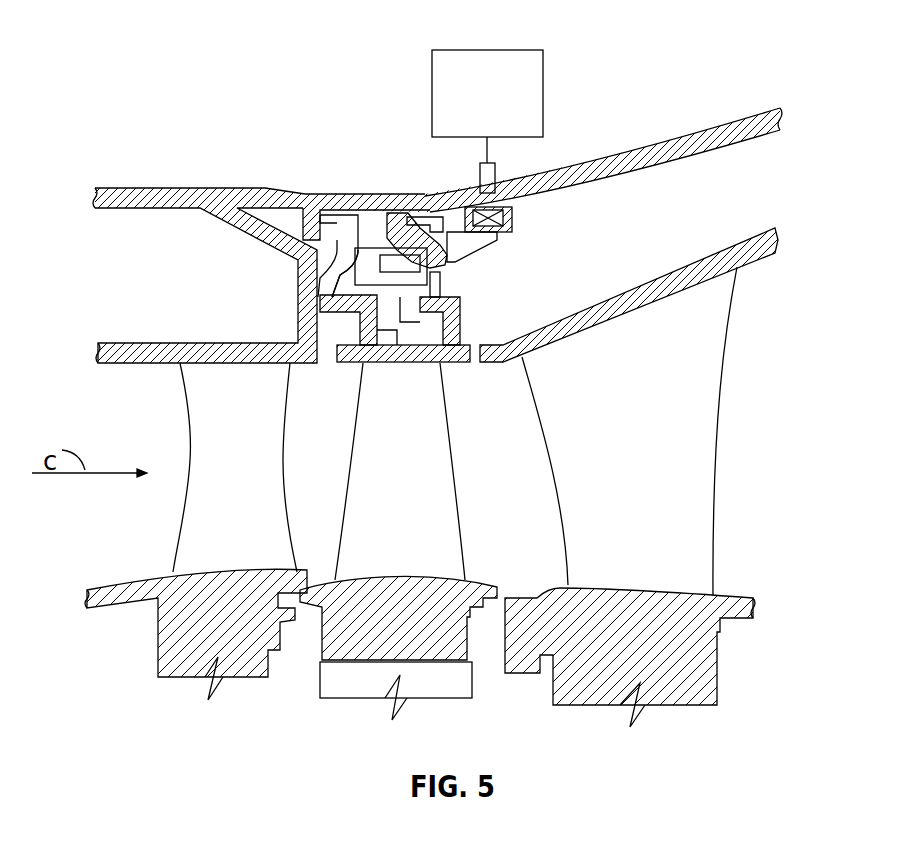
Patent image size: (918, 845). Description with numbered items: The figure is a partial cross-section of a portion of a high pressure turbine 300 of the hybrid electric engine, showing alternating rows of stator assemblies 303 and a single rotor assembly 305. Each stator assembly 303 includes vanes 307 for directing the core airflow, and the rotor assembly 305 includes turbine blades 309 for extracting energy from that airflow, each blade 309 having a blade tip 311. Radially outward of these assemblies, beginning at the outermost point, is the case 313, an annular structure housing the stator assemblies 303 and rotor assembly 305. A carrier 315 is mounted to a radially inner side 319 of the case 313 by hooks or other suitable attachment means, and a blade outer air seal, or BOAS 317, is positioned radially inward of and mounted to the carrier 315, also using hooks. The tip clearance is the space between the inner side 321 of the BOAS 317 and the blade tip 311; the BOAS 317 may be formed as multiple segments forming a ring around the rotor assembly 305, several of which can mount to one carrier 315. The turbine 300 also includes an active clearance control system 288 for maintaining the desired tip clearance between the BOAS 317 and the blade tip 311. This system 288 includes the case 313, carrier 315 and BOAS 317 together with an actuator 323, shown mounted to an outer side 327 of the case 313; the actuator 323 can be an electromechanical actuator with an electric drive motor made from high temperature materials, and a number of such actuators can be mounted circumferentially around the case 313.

The high pressure turbine 300 is at (205, 78).
The outer side of case 327 is at (205, 190).
The case 313 is at (297, 200).
The blade tip 311 is at (392, 350).
The radially inner side of case 319 is at (372, 210).
The actuator 323 is at (488, 50).
The active clearance control system 288 is at (582, 138).
The carrier 315 is at (328, 294).
The blade outer air seal (BOAS) 317 is at (461, 316).
The inner side of BOAS 321 is at (446, 364).
The vane 307 is at (252, 516).
The turbine blade 309 is at (424, 519).
The stator assembly 303 is at (168, 568).
The rotor assembly 305 is at (490, 682).